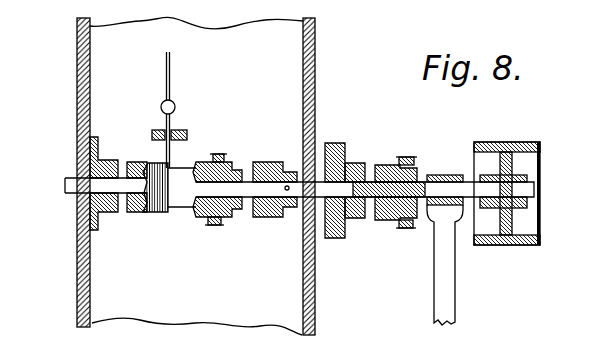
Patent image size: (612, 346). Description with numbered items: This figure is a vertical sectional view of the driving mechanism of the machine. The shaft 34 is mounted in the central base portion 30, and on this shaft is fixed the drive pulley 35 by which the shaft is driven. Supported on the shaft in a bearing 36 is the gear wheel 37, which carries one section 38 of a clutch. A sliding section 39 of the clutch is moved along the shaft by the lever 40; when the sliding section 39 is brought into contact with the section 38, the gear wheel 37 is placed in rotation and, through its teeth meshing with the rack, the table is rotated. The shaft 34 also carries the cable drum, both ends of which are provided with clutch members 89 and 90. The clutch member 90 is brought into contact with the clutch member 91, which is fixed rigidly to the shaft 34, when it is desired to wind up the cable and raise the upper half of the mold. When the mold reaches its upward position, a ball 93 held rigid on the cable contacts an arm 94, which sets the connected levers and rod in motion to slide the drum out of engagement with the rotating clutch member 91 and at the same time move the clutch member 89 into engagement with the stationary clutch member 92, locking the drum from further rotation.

The central base portion 30 is at (76, 283).
The shaft 34 is at (65, 185).
The drive pulley 35 is at (514, 135).
The bearing 36 is at (445, 175).
The gear wheel 37 is at (335, 143).
The clutch section 38 is at (358, 165).
The sliding clutch section 39 is at (384, 221).
The lever 40 is at (406, 157).
The clutch member 89 is at (140, 213).
The clutch member 90 is at (235, 162).
The clutch member 91 is at (272, 162).
The stationary clutch member 92 is at (103, 158).
The ball 93 is at (173, 102).
The arm 94 is at (186, 137).